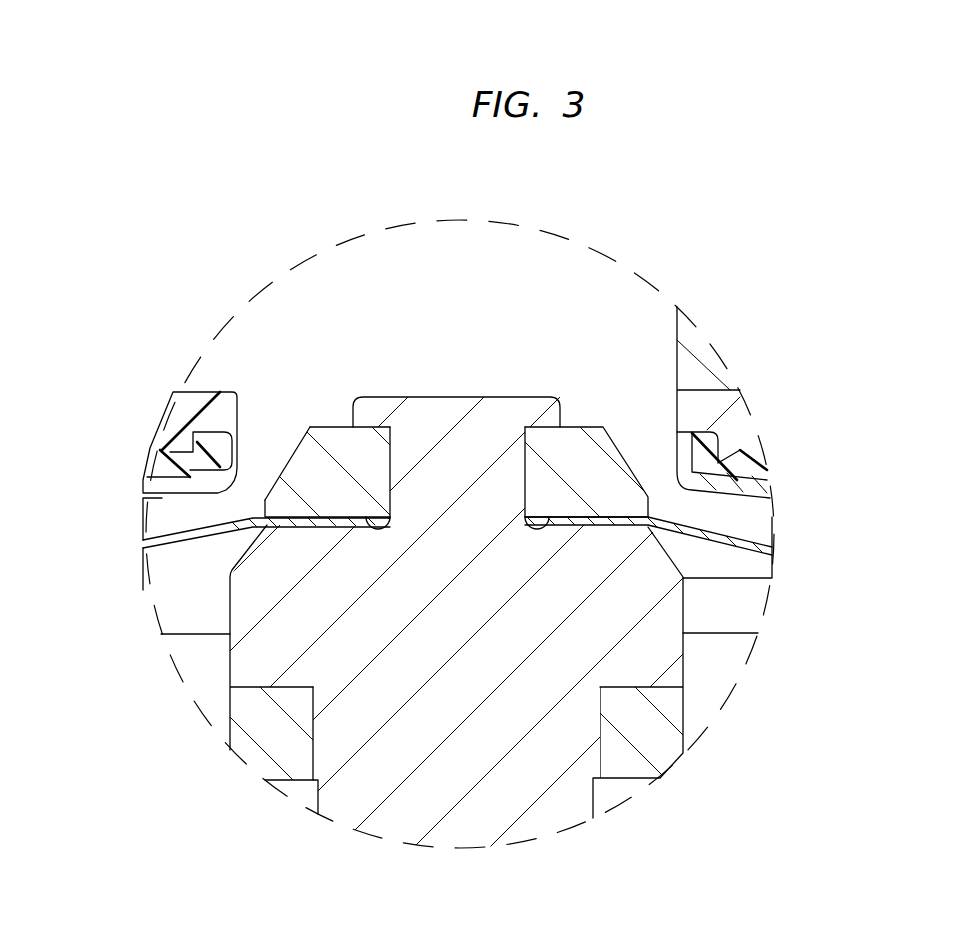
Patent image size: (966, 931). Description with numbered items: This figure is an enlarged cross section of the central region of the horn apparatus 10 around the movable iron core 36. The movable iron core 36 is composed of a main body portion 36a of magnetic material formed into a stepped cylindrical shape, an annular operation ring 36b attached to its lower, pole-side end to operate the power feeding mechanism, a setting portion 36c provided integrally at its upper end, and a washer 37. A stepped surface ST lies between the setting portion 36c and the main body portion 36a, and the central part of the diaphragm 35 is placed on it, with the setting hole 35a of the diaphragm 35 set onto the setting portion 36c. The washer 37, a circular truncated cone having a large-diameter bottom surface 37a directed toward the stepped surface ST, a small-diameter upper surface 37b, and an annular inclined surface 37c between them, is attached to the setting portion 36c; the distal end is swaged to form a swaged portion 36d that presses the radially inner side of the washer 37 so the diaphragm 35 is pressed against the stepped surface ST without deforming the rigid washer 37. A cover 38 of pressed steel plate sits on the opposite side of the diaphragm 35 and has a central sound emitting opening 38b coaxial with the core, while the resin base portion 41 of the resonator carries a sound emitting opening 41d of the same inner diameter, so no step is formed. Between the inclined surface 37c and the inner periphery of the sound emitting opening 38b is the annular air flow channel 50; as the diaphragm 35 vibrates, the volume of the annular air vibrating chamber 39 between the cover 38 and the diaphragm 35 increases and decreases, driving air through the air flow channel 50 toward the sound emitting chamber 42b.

The horn apparatus 10 is at (816, 372).
The diaphragm 35 is at (192, 540).
The setting hole 35a is at (483, 470).
The movable iron core 36 is at (597, 803).
The main body portion 36a is at (433, 712).
The operation ring 36b is at (267, 737).
The setting portion 36c is at (448, 470).
The swaged portion 36d is at (527, 427).
The washer 37 is at (603, 515).
The bottom surface 37a is at (772, 578).
The upper surface 37b is at (337, 417).
The inclined surface 37c is at (264, 500).
The cover 38 is at (143, 503).
The sound emitting opening 38b is at (677, 452).
The air vibrating chamber 39 is at (772, 534).
The base portion 41 is at (173, 395).
The sound emitting opening 41d is at (243, 452).
The sound emitting chamber 42b is at (430, 298).
The air flow channel 50 is at (205, 385).
The stepped surface ST is at (767, 472).